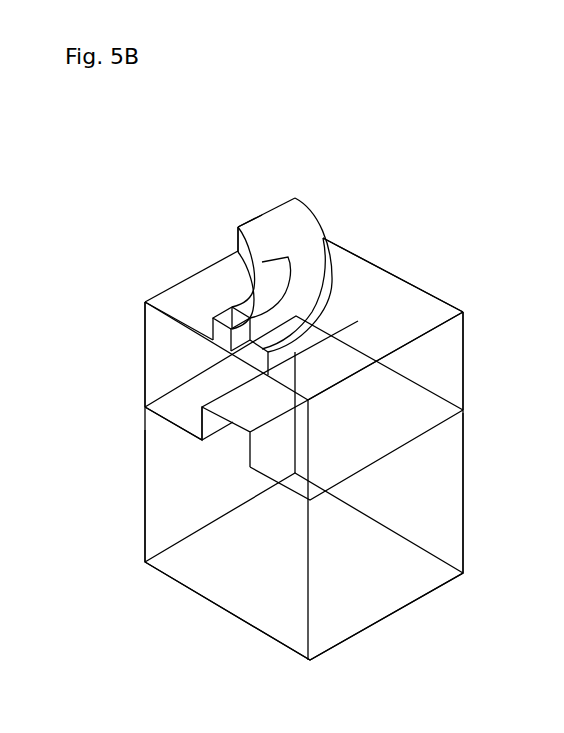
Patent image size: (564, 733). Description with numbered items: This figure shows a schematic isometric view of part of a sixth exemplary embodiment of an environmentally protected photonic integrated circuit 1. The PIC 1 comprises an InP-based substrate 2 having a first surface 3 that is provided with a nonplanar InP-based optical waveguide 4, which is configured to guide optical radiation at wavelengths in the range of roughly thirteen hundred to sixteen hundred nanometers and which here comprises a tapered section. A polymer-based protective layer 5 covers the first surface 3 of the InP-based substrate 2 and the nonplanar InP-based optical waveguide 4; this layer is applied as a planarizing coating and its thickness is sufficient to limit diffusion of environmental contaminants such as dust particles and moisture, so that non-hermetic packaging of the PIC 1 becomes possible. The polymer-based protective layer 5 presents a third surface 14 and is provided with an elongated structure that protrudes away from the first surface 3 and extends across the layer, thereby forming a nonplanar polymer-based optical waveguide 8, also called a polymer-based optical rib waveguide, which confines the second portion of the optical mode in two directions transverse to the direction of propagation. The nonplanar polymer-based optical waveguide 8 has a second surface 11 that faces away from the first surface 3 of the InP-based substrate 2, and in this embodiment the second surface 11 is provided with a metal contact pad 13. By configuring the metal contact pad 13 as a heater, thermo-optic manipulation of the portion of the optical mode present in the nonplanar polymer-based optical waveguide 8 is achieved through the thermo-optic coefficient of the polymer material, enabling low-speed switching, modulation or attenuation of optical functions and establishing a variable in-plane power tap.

The environmentally protected photonic integrated circuit (PIC) 1 is at (442, 146).
The InP-based substrate 2 is at (445, 477).
The first surface of the InP-based substrate 3 is at (173, 400).
The nonplanar InP-based optical waveguide 4 is at (212, 388).
The polymer-based protective layer 5 is at (445, 343).
The nonplanar polymer-based optical waveguide 8 is at (302, 252).
The second surface of the nonplanar polymer-based optical waveguide 11 is at (262, 220).
The metal contact pad 13 is at (270, 278).
The third surface of the polymer-based protective layer 14 is at (407, 298).